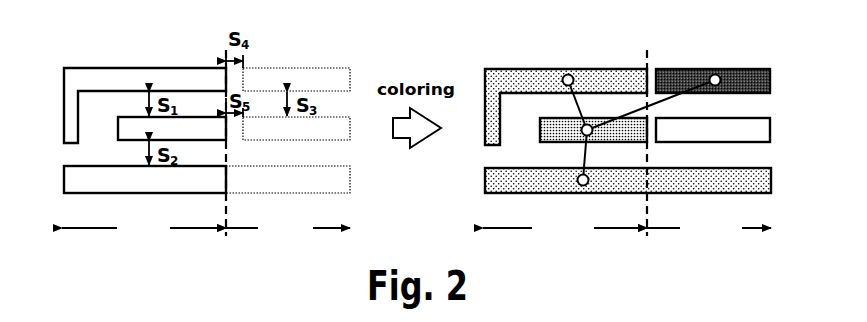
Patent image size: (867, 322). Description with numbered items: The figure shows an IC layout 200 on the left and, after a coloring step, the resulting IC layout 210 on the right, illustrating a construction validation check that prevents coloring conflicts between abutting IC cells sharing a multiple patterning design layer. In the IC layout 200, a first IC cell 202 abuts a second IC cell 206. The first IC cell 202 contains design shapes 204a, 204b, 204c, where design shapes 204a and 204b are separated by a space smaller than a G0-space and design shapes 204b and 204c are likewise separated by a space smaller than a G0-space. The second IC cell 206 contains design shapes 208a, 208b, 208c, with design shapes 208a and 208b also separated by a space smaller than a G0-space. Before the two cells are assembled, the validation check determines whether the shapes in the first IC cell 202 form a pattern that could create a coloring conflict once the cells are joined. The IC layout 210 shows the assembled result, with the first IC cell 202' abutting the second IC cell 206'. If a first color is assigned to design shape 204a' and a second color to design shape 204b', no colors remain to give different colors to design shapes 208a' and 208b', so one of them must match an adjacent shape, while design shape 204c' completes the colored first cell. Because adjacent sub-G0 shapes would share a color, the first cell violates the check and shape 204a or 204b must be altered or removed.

The IC layout 200 is at (99, 22).
The IC layout 210 is at (481, 22).
The first IC cell 202 is at (144, 228).
The second IC cell 206 is at (288, 228).
The design shape 204a is at (145, 86).
The design shape 204b is at (145, 141).
The design shape 204c is at (120, 192).
The design shape 208a is at (307, 60).
The design shape 208b is at (296, 142).
The design shape 208c is at (297, 193).
The first IC cell 202' is at (565, 228).
The second IC cell 206' is at (709, 228).
The design shape 204a' is at (566, 93).
The design shape 204b' is at (560, 141).
The design shape 204c' is at (599, 193).
The design shape 208a' is at (736, 67).
The design shape 208b' is at (736, 116).